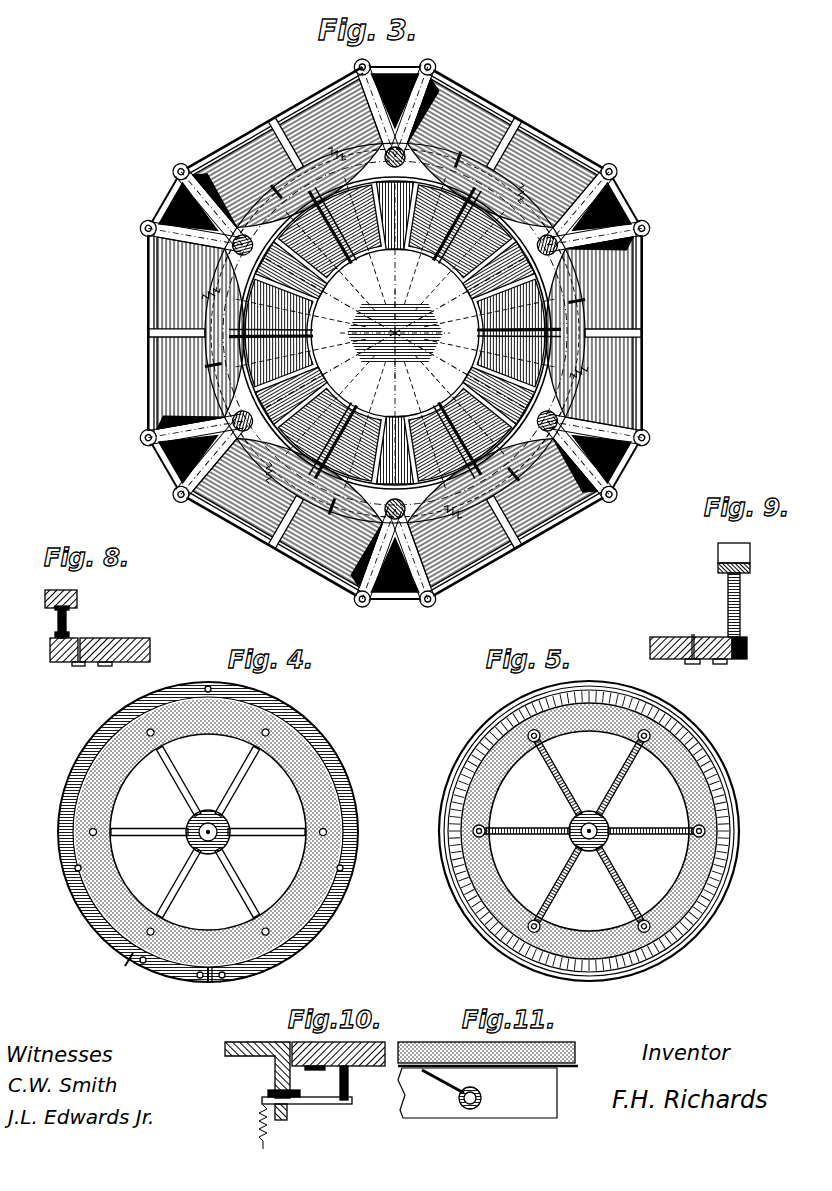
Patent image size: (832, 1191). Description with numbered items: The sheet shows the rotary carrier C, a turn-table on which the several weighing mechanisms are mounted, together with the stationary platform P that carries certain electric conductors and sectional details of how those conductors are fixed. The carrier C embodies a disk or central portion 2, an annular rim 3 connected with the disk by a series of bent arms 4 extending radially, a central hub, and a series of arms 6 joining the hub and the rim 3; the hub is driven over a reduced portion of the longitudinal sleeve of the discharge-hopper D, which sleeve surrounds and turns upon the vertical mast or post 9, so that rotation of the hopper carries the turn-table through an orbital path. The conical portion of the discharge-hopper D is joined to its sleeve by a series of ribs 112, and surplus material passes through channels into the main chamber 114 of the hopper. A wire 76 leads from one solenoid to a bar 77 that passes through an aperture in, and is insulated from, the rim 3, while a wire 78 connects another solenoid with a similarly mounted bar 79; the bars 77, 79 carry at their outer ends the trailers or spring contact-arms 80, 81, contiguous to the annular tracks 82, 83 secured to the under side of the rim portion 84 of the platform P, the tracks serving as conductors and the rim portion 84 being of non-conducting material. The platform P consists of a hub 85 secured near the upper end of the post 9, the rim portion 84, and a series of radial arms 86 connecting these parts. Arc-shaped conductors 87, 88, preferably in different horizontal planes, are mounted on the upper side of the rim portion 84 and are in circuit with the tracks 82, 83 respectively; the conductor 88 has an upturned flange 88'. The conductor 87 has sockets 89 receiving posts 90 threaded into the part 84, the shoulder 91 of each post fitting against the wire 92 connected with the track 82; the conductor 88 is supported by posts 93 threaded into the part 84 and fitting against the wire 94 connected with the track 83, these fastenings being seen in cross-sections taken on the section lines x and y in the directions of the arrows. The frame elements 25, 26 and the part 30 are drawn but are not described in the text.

In FIG. 3, the disk or central portion 2 is at (365, 318).
In FIG. 4, the annular rim 3 is at (258, 1029).
In FIG. 10, the annular rim 3 is at (258, 1043).
In FIG. 3, the bent arms 4 is at (381, 338).
In FIG. 3, the arms 6 is at (428, 325).
In FIG. 3, the vertical mast or post 9 is at (400, 325).
In FIG. 3, the frame corner pivot 25 is at (437, 68).
In FIG. 3, the frame side member 26 is at (370, 64).
In FIG. 3, the stud 30 is at (378, 512).
In FIG. 3, the wire 76 is at (322, 150).
In FIG. 3, the bar 77 is at (380, 186).
In FIG. 3, the wire 78 is at (466, 165).
In FIG. 10, the wire 78 is at (262, 1142).
In FIG. 3, the bar 79 is at (296, 240).
In FIG. 10, the bar 79 is at (326, 1105).
In FIG. 11, the bar 79 is at (481, 1098).
In FIG. 3, the trailer or spring contact-arm 80 is at (392, 347).
In FIG. 3, the trailer or spring contact-arm 81 is at (395, 334).
In FIG. 10, the trailer or spring contact-arm 81 is at (344, 1090).
In FIG. 11, the trailer or spring contact-arm 81 is at (450, 1090).
In FIG. 5, the track 82 is at (468, 904).
In FIG. 8, the track 82 is at (78, 668).
In FIG. 9, the track 82 is at (722, 666).
In FIG. 10, the track 82 is at (305, 1069).
In FIG. 5, the track 83 is at (500, 928).
In FIG. 8, the track 83 is at (105, 668).
In FIG. 9, the track 83 is at (692, 666).
In FIG. 10, the track 83 is at (350, 1070).
In FIG. 11, the track 83 is at (570, 1068).
In FIG. 4, the rim portion 84 is at (300, 748).
In FIG. 5, the rim portion 84 is at (552, 858).
In FIG. 8, the rim portion 84 is at (146, 640).
In FIG. 9, the rim portion 84 is at (652, 640).
In FIG. 10, the rim portion 84 is at (364, 1043).
In FIG. 11, the rim portion 84 is at (452, 1043).
In FIG. 3, the hub or sleeve 85 is at (405, 345).
In FIG. 4, the hub or sleeve 85 is at (228, 822).
In FIG. 5, the hub or sleeve 85 is at (602, 824).
In FIG. 4, the radial arms 86 is at (232, 790).
In FIG. 5, the radial arms 86 is at (612, 790).
In FIG. 4, the arc-shaped conductor 87 is at (72, 798).
In FIG. 5, the arc-shaped conductor 87 is at (446, 868).
In FIG. 8, the arc-shaped conductor 87 is at (48, 592).
In FIG. 4, the arc-shaped conductor 88 is at (209, 848).
In FIG. 5, the arc-shaped conductor 88 is at (641, 983).
In FIG. 9, the arc-shaped conductor 88 is at (717, 565).
In FIG. 9, the upturned flange 88' is at (718, 549).
In FIG. 8, the sockets 89 is at (56, 608).
In FIG. 8, the posts 90 is at (56, 632).
In FIG. 8, the shoulder 91 is at (68, 628).
In FIG. 4, the wire 92 is at (222, 960).
In FIG. 8, the wire 92 is at (80, 640).
In FIG. 9, the posts 93 is at (742, 600).
In FIG. 4, the wire 94 is at (200, 960).
In FIG. 9, the wire 94 is at (694, 636).
In FIG. 3, the ribs 112 is at (292, 112).
In FIG. 3, the main chamber 114 is at (545, 145).
In FIG. 3, the carrier C is at (226, 386).
In FIG. 3, the discharge-hopper D is at (580, 132).
In FIG. 4, the platform P is at (130, 792).
In FIG. 5, the platform P is at (512, 855).
In FIG. 8, the platform P is at (130, 628).
In FIG. 9, the platform P is at (662, 622).
In FIG. 4, the section line x is at (88, 876).
In FIG. 4, the section line y is at (206, 958).